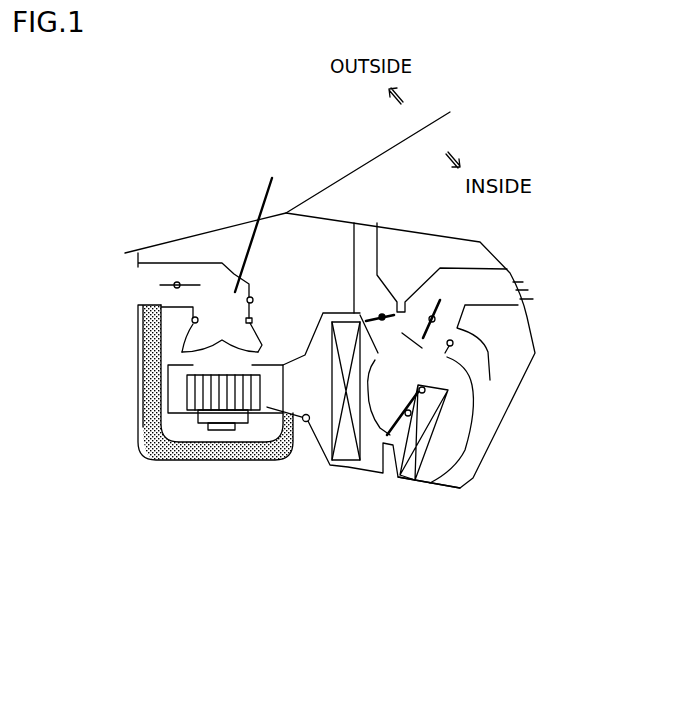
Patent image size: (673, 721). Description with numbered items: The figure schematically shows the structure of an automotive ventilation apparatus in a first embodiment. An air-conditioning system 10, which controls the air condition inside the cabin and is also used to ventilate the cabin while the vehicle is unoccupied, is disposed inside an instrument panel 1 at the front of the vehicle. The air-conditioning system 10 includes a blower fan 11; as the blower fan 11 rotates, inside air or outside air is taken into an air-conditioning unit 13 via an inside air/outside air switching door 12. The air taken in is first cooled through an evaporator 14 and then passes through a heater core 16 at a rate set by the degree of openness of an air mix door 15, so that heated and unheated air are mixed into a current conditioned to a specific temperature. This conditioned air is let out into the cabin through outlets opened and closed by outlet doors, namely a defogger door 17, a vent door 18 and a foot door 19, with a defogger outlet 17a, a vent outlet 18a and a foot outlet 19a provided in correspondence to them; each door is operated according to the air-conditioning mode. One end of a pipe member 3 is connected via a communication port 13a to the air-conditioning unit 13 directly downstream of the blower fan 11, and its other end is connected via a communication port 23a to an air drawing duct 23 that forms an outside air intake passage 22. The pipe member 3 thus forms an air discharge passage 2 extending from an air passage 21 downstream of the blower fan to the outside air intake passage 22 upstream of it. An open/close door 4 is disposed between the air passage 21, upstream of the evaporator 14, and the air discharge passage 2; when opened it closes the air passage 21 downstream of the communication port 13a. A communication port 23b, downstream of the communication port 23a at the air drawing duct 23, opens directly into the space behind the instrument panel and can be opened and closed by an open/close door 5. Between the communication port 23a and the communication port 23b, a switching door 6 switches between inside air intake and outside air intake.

The instrument panel 1 is at (398, 227).
The air discharge passage 2 is at (223, 450).
The pipe member 3 is at (152, 447).
The open/close door 4 is at (307, 422).
The open/close door 5 is at (250, 285).
The switching door 6 is at (163, 283).
The air-conditioning system 10 is at (337, 595).
The blower fan 11 is at (187, 392).
The inside air/outside air switching door 12 is at (188, 332).
The air-conditioning unit 13 is at (272, 365).
The communication port 13a is at (286, 445).
The evaporator 14 is at (348, 467).
The air mix door 15 is at (393, 423).
The heater core 16 is at (413, 482).
The defogger door 17 is at (368, 322).
The defogger outlet 17a is at (366, 242).
The vent door 18 is at (433, 313).
The vent outlet 18a is at (503, 292).
The foot door 19 is at (445, 353).
The foot outlet 19a is at (430, 488).
The air passage 21 is at (307, 378).
The outside air intake passage 22 is at (205, 297).
The air drawing duct 23 is at (228, 267).
The communication port 23a is at (157, 305).
The communication port 23b is at (263, 221).